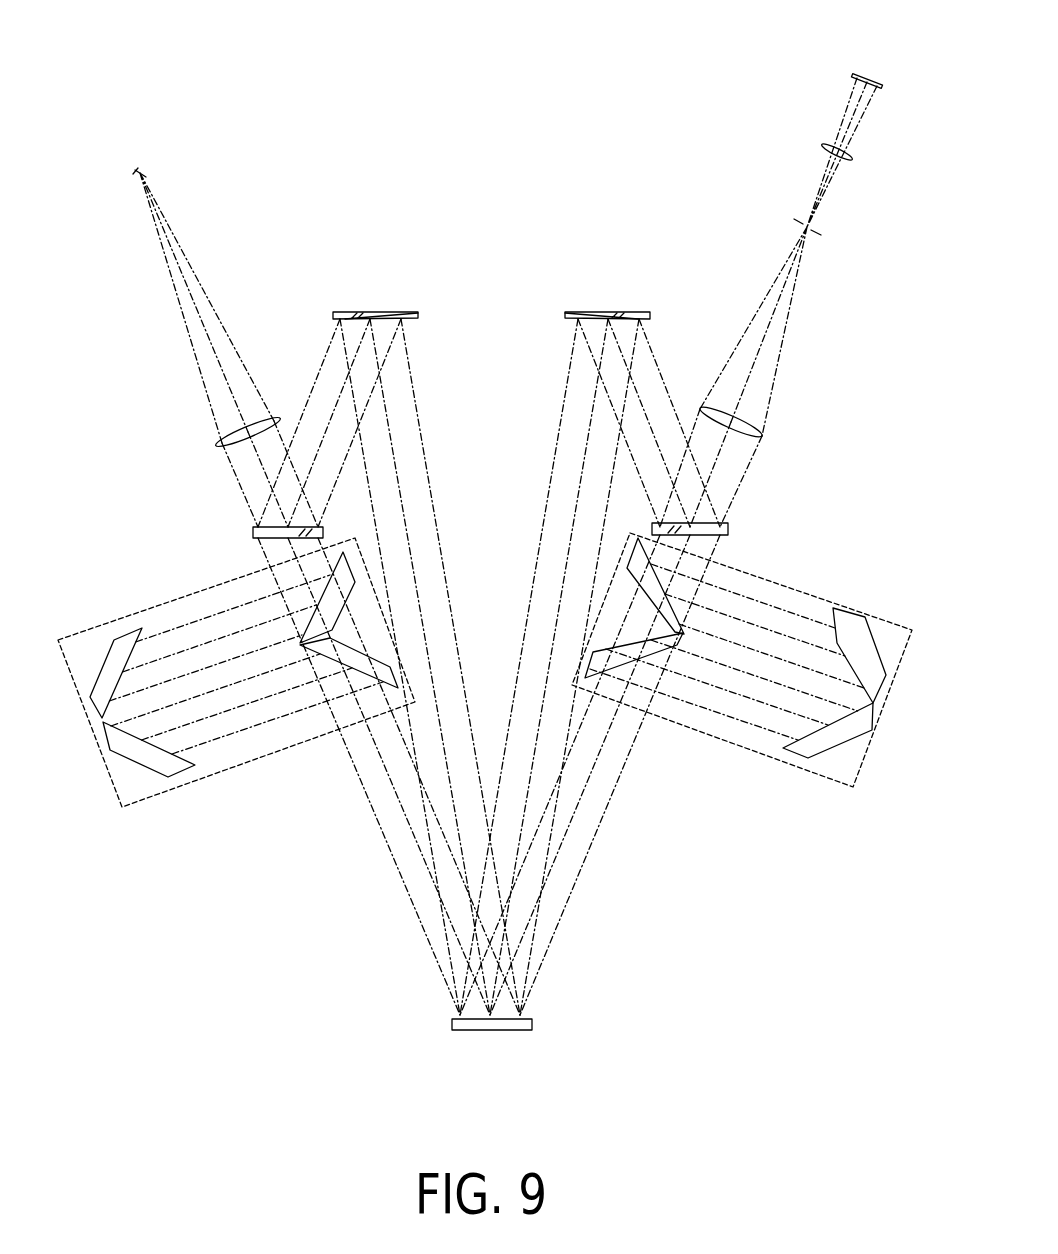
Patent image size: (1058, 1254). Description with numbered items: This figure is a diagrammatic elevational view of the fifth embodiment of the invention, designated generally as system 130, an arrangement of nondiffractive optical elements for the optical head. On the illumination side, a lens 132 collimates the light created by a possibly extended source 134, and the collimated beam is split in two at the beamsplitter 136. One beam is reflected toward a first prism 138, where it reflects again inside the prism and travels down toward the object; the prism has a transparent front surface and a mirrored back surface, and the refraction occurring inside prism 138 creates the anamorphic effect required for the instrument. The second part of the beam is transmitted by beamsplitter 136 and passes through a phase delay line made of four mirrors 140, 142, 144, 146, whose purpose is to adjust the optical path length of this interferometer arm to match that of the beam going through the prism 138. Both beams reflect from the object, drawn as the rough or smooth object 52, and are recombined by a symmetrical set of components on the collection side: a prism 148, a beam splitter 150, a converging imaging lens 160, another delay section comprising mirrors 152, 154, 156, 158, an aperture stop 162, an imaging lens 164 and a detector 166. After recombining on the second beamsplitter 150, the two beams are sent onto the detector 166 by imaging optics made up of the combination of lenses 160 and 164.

The system 130 is at (502, 125).
The source 134 is at (143, 174).
The lens 132 is at (233, 430).
The beamsplitter 136 is at (254, 530).
The first prism 138 is at (355, 311).
The mirror 140 is at (317, 592).
The mirror 142 is at (135, 627).
The mirror 144 is at (150, 776).
The mirror 146 is at (365, 683).
The prism 148 is at (630, 311).
The beam splitter 150 is at (722, 524).
The mirror 152 is at (617, 656).
The mirror 154 is at (828, 751).
The mirror 156 is at (661, 590).
The mirror 158 is at (843, 609).
The converging imaging lens 160 is at (757, 412).
The aperture stop 162 is at (815, 233).
The imaging lens 164 is at (826, 151).
The detector 166 is at (853, 78).
The rough or smooth object 52 is at (455, 1031).